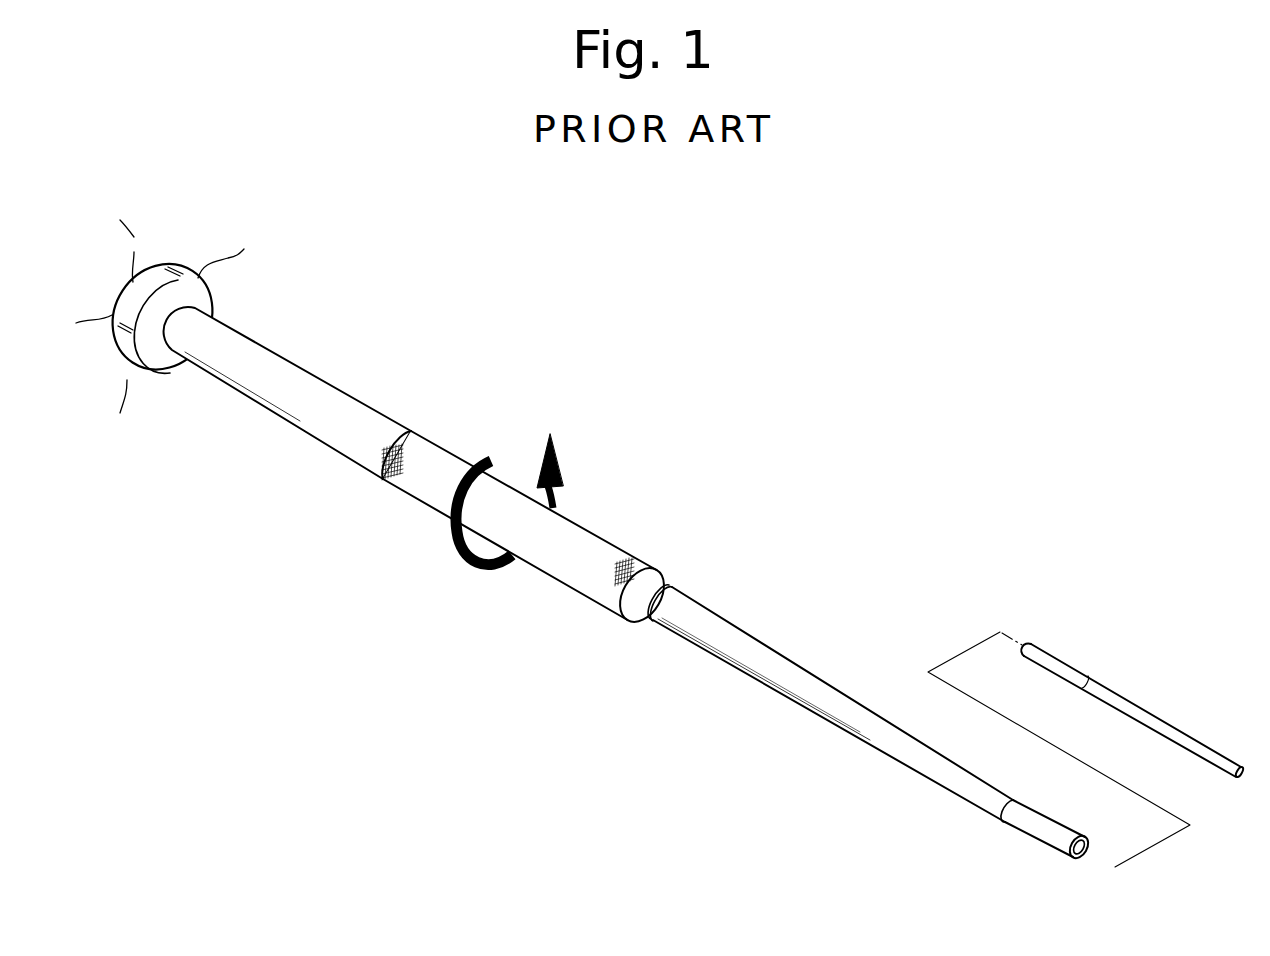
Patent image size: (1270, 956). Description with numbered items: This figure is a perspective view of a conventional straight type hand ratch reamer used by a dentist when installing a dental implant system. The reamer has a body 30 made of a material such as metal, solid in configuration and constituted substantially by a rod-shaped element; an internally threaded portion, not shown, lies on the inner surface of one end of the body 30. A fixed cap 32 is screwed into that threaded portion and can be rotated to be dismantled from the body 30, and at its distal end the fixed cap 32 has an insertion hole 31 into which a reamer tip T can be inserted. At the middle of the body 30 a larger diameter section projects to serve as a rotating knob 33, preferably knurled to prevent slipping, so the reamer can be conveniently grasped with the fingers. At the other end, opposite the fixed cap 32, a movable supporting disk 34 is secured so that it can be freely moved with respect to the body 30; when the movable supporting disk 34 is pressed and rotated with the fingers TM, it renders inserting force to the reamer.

The body 30 is at (703, 610).
The insertion hole 31 is at (1093, 846).
The fixed cap 32 is at (1038, 826).
The rotating knob 33 is at (599, 586).
The movable supporting disk 34 is at (162, 365).
The reamer tip T is at (1055, 664).
The fingers TM is at (240, 243).